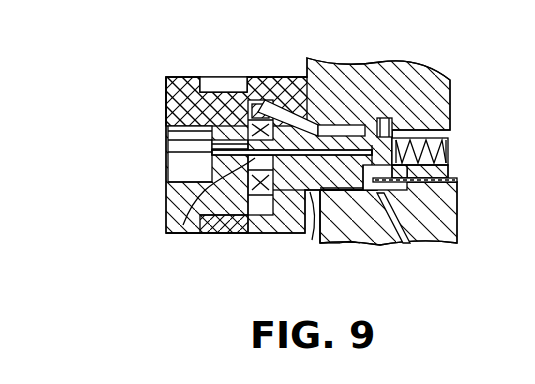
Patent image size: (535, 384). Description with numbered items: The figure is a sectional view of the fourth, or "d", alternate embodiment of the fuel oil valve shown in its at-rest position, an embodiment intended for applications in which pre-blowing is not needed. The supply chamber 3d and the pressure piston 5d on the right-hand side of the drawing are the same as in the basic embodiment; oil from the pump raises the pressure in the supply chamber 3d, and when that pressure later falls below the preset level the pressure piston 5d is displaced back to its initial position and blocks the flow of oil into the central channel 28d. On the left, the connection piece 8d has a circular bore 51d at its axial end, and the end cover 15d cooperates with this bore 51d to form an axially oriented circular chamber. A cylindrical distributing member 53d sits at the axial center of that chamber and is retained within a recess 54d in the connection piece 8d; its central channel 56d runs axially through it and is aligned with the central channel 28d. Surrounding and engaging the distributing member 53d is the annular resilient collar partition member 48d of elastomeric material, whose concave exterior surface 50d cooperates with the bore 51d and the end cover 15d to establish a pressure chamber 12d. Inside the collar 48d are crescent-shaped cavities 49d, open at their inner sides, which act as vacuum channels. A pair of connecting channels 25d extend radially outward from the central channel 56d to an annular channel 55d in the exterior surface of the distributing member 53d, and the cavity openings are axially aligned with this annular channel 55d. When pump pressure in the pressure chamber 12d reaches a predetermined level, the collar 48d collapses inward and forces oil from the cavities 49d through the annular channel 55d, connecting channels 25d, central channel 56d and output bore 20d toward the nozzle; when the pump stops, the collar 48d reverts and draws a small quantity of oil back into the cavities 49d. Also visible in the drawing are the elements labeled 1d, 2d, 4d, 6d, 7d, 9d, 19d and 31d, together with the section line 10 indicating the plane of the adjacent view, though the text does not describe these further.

The valve body 1d is at (373, 232).
The inclined passage 2d is at (403, 243).
The supply chamber 3d is at (438, 207).
The plate 4d is at (450, 182).
The pressure piston 5d is at (452, 172).
The spring 6d is at (452, 160).
The valve member 7d is at (380, 145).
The connection piece 8d is at (287, 220).
The valve seat 9d is at (372, 145).
The section line 10 is at (263, 70).
The pressure chamber 12d is at (258, 100).
The end cover 15d is at (173, 192).
The piston rod 19d is at (218, 155).
The output bore 20d is at (175, 162).
The connecting channels 25d is at (177, 230).
The central channel 28d is at (330, 238).
The inclined bore 31d is at (283, 108).
The annular resilient collar partition member 48d is at (222, 228).
The crescent-shaped cavities 49d is at (197, 105).
The exterior surface of the collar 50d is at (250, 128).
The circular bore 51d is at (255, 103).
The cylindrical distributing member 53d is at (254, 226).
The recess 54d is at (324, 240).
The annular channel 55d is at (312, 235).
The central channel 56d is at (167, 215).